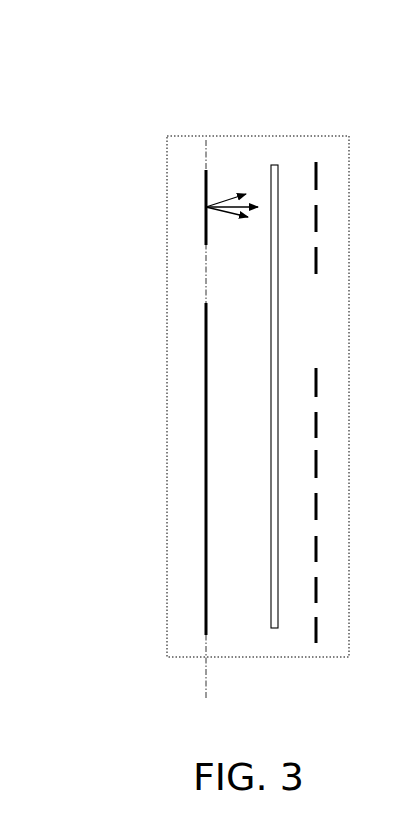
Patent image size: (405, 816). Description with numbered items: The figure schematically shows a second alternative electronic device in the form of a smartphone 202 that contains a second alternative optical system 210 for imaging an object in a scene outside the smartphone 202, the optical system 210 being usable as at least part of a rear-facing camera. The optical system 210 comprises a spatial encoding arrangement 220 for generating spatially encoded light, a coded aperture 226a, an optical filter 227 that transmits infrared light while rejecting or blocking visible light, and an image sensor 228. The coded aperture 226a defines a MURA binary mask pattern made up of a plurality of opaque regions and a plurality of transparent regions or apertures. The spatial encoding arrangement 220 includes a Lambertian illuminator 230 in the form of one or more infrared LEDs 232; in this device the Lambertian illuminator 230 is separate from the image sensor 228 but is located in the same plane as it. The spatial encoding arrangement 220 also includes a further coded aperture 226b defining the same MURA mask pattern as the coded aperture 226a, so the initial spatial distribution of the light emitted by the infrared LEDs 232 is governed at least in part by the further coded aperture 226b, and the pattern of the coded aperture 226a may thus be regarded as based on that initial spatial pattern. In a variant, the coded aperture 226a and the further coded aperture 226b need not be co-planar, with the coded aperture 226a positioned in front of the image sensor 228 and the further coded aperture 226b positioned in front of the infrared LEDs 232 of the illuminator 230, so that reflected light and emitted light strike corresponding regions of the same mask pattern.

The smartphone 202 is at (115, 613).
The optical system 210 is at (183, 637).
The spatial encoding arrangement 220 is at (240, 160).
The coded aperture 226a is at (313, 645).
The further coded aperture 226b is at (315, 153).
The optical filter 227 is at (273, 163).
The image sensor 228 is at (204, 345).
The Lambertian illuminator 230 is at (205, 163).
The infrared LEDs 232 is at (205, 207).